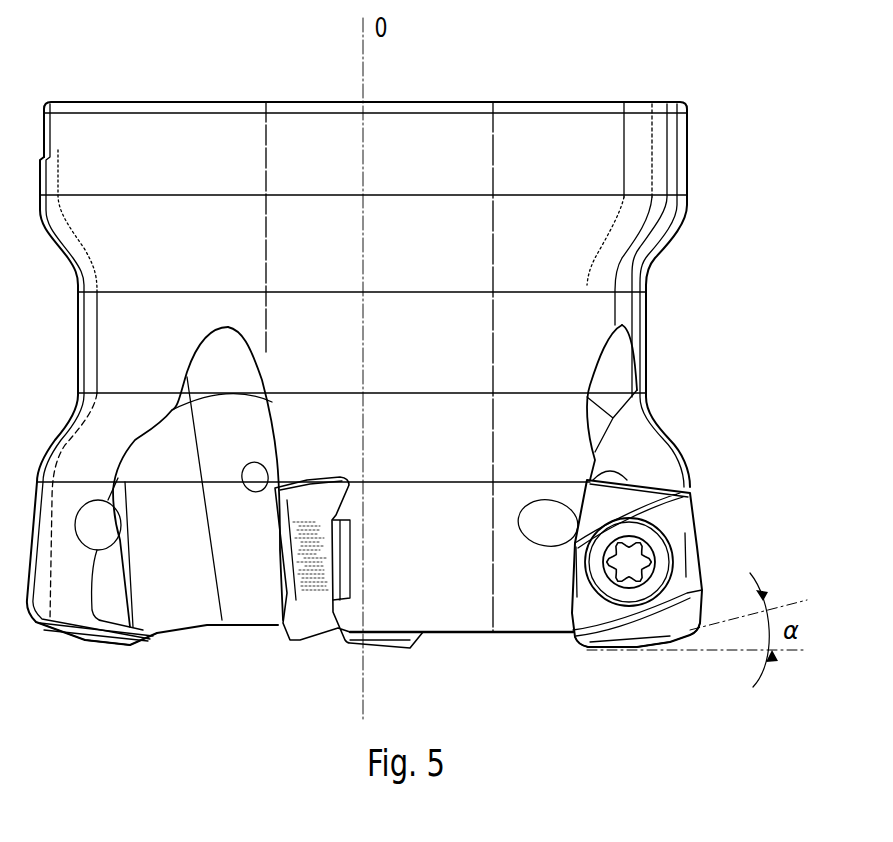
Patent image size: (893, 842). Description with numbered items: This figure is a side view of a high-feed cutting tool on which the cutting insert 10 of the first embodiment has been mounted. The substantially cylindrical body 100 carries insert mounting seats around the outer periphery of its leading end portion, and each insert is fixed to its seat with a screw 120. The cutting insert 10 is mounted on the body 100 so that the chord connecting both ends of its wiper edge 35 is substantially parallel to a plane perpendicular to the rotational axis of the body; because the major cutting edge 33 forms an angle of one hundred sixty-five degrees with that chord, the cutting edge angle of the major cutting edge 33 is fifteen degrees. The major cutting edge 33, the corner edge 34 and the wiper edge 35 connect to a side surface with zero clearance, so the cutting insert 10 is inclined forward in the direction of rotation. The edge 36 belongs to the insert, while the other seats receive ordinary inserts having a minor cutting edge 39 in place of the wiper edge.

The body 100 is at (600, 152).
The cutting insert 10 is at (668, 515).
The screw 120 is at (630, 560).
The major cutting edge 33 is at (668, 643).
The corner edge 34 is at (638, 650).
The wiper edge 35 is at (602, 650).
The inner corner edge 36 is at (582, 652).
The minor cutting edge 39 is at (125, 645).